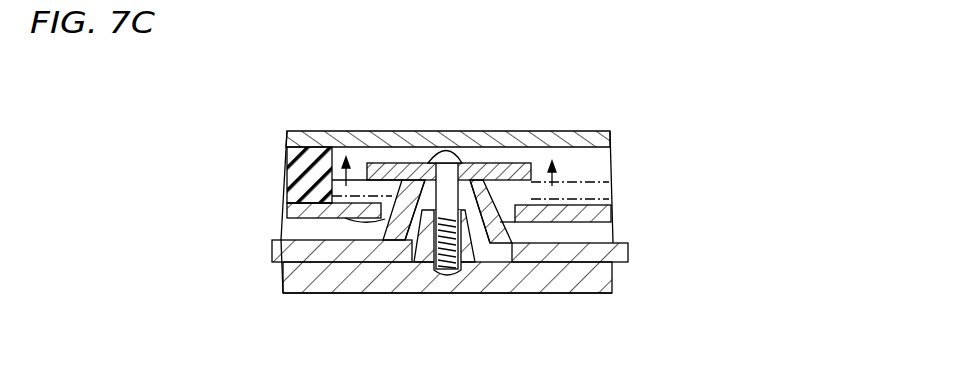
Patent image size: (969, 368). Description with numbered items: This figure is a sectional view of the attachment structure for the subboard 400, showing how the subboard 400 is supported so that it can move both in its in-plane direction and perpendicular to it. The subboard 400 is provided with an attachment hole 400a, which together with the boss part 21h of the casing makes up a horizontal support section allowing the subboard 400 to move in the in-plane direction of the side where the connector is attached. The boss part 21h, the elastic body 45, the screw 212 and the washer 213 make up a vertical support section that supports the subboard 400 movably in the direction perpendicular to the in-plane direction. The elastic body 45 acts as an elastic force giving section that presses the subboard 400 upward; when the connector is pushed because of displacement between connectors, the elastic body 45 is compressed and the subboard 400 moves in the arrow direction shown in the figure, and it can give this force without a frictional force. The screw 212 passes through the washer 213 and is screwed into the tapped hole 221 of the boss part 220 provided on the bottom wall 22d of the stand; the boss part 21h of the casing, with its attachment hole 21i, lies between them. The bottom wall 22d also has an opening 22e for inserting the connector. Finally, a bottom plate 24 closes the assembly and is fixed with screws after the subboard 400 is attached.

The elastic body 45 is at (306, 150).
The bottom plate 24 is at (327, 141).
The screw 212 is at (435, 147).
The washer 213 is at (473, 147).
The subboard 400 is at (612, 210).
The attachment hole 400a is at (286, 197).
The attachment hole 21i is at (488, 186).
The boss part 21h is at (493, 227).
The opening 22e is at (288, 293).
The bottom wall 22d is at (330, 293).
The tapped hole 221 is at (440, 293).
The boss part 220 is at (473, 293).